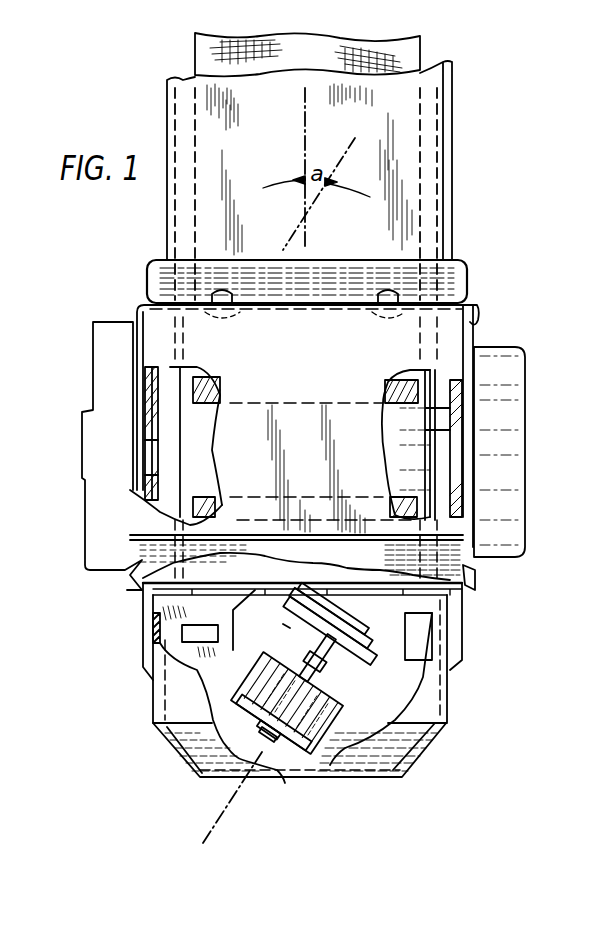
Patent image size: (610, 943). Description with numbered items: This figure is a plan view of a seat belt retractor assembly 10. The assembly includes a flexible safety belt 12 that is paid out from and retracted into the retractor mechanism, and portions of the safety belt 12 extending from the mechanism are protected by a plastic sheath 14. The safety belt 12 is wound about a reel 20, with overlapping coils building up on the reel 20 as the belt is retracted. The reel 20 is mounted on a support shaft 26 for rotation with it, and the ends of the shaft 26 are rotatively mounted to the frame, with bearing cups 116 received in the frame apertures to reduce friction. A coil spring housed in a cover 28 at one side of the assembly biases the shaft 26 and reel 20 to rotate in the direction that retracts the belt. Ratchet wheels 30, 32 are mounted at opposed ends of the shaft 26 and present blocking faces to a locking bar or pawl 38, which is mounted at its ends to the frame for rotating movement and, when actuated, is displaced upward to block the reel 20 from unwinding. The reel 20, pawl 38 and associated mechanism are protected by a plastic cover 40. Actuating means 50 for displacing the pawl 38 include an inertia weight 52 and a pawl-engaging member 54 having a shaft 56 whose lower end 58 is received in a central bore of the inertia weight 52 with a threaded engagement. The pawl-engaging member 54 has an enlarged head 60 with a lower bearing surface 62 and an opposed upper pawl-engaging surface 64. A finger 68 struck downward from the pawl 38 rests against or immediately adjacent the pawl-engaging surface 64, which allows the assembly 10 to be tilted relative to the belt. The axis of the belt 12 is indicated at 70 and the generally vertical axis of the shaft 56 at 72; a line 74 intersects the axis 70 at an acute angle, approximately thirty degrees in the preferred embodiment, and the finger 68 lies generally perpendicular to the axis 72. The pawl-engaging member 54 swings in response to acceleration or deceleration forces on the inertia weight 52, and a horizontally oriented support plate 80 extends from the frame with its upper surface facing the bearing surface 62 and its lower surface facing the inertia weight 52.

The seat belt retractor assembly 10 is at (497, 172).
The safety belt 12 is at (403, 52).
The plastic sheath 14 is at (227, 90).
The reel 20 is at (217, 470).
The support shaft 26 is at (423, 453).
The cover 28 is at (525, 370).
The ratchet wheel 30 is at (180, 440).
The ratchet wheel 32 is at (417, 377).
The locking bar or pawl 38 is at (248, 587).
The plastic cover 40 is at (218, 552).
The actuating means 50 is at (263, 642).
The inertia weight 52 is at (330, 765).
The pawl-engaging member 54 is at (338, 663).
The shaft 56 is at (317, 637).
The lower end 58 is at (268, 748).
The enlarged head 60 is at (363, 630).
The lower bearing surface 62 is at (293, 622).
The pawl-engaging surface 64 is at (345, 597).
The finger 68 is at (320, 590).
The axis of belt 70 is at (305, 103).
The axis of shaft 72 is at (213, 828).
The line 74 is at (283, 247).
The support plate 80 is at (385, 662).
The bearing cups 116 is at (142, 443).